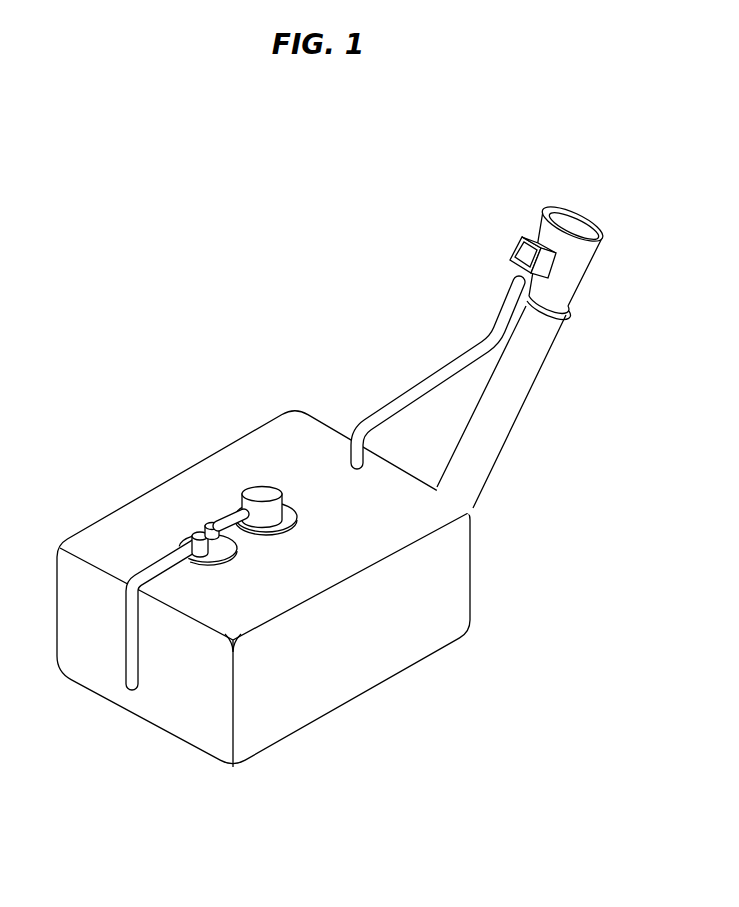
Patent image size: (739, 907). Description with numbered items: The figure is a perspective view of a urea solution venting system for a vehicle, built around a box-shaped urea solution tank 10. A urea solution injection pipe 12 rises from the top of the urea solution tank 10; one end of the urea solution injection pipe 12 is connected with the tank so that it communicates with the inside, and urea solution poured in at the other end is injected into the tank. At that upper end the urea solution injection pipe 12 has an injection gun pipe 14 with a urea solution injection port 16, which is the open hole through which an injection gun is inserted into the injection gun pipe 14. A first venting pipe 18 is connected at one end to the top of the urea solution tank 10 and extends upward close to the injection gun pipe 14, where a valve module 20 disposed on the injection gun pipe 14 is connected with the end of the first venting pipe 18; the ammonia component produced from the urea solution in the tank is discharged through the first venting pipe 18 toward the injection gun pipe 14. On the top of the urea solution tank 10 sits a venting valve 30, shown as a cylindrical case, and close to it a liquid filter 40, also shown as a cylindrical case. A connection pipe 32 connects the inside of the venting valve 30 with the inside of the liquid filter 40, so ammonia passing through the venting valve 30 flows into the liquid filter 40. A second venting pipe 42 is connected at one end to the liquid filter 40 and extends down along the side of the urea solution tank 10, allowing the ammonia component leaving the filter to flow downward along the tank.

The urea solution tank 10 is at (185, 475).
The urea solution injection pipe 12 is at (532, 388).
The injection gun pipe 14 is at (588, 267).
The urea solution injection port 16 is at (574, 211).
The first venting pipe 18 is at (420, 383).
The valve module 20 is at (522, 250).
The venting valve 30 is at (266, 491).
The connection pipe 32 is at (233, 509).
The liquid filter 40 is at (180, 538).
The second venting pipe 42 is at (131, 672).